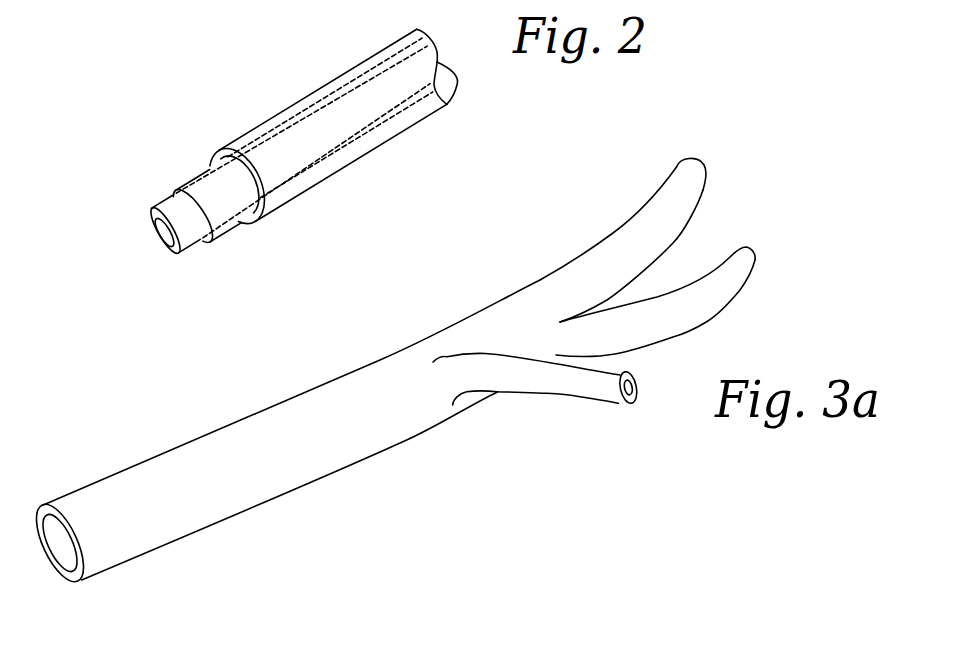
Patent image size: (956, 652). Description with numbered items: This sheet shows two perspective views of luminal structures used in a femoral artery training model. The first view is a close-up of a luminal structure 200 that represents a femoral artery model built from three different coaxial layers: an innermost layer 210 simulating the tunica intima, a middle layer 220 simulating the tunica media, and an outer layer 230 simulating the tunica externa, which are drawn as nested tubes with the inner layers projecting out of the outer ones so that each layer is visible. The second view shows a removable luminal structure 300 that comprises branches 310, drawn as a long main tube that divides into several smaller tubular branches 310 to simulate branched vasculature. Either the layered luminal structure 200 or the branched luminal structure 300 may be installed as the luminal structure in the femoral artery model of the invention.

In FIG. 2, the luminal structure 200 is at (125, 96).
In FIG. 2, the tunica intima layer 210 is at (183, 233).
In FIG. 2, the tunica media layer 220 is at (230, 227).
In FIG. 2, the tunica externa layer 230 is at (282, 200).
In FIG. 3A, the removable luminal structure 300 is at (382, 517).
In FIG. 3A, the branches 310 is at (749, 246).